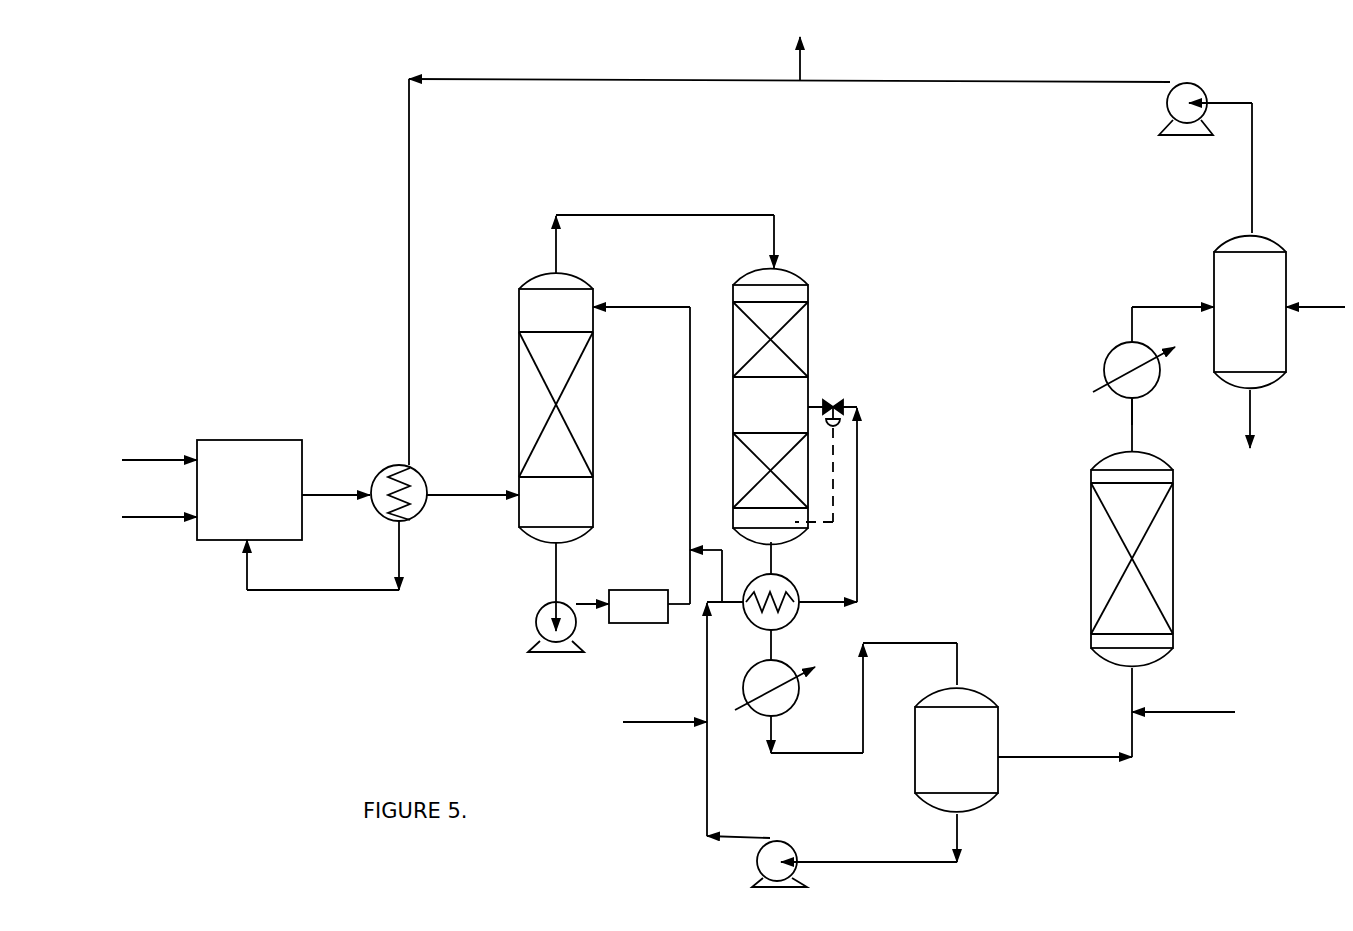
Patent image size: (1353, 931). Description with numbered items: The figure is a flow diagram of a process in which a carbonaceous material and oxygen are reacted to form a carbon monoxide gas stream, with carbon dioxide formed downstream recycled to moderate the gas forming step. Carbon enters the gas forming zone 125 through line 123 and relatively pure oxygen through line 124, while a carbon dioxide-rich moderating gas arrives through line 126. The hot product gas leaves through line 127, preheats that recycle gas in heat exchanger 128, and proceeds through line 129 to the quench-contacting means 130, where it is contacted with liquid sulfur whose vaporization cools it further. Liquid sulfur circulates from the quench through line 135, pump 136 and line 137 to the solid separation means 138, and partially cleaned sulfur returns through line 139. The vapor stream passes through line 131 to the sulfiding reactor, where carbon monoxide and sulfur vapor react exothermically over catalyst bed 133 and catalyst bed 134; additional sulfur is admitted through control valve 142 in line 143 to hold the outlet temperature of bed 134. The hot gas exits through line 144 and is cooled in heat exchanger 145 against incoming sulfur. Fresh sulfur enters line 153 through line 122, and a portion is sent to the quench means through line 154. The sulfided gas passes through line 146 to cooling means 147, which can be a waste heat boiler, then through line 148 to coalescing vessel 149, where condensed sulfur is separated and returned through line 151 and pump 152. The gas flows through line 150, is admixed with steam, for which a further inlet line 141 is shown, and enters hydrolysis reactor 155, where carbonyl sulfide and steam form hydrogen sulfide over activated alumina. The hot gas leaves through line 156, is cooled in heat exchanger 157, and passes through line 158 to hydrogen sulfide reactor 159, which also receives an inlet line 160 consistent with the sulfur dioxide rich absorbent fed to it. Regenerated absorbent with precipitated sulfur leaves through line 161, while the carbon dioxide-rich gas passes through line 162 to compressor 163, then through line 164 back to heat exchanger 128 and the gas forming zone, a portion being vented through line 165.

The line 122 is at (660, 724).
The line 123 is at (160, 439).
The line 124 is at (160, 496).
The gas forming zone 125 is at (247, 440).
The line 126 is at (332, 592).
The line 127 is at (316, 493).
The heat exchanger 128 is at (422, 478).
The line 129 is at (470, 498).
The quench-contacting means 130 is at (595, 422).
The line 131 is at (558, 242).
The catalyst bed 133 is at (810, 334).
The catalyst bed 134 is at (745, 468).
The line 135 is at (559, 566).
The pump 136 is at (535, 634).
The line 137 is at (586, 608).
The solid separation means 138 is at (642, 590).
The line 139 is at (636, 306).
The line 141 is at (1222, 701).
The control valve 142 is at (840, 404).
The line 143 is at (859, 452).
The line 144 is at (774, 560).
The heat exchanger 145 is at (794, 590).
The line 146 is at (774, 646).
The cooling means 147 is at (792, 706).
The line 148 is at (865, 684).
The coalescing vessel 149 is at (1000, 710).
The line 150 is at (1080, 760).
The line 151 is at (960, 840).
The pump 152 is at (790, 844).
The line 153 is at (706, 782).
The line 154 is at (724, 566).
The hydrolysis reactor 155 is at (1175, 562).
The line 156 is at (1112, 418).
The heat exchanger 157 is at (1102, 372).
The line 158 is at (1162, 305).
The hydrogen sulfide reactor 159 is at (1288, 264).
The line 160 is at (1332, 310).
The line 161 is at (1252, 418).
The line 162 is at (1254, 160).
The compressor 163 is at (1200, 90).
The line 164 is at (933, 85).
The line 165 is at (802, 68).